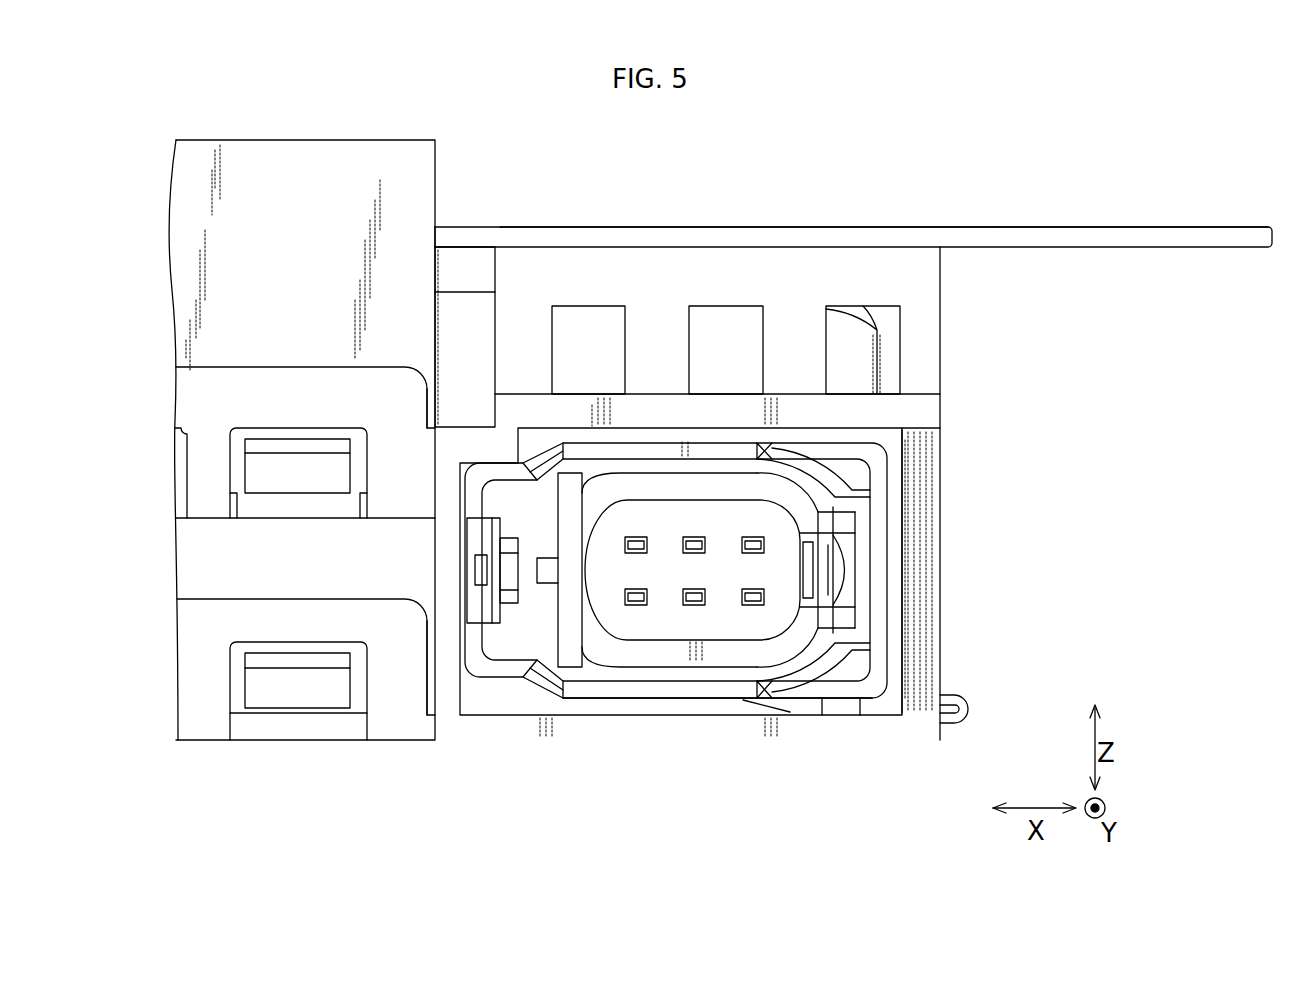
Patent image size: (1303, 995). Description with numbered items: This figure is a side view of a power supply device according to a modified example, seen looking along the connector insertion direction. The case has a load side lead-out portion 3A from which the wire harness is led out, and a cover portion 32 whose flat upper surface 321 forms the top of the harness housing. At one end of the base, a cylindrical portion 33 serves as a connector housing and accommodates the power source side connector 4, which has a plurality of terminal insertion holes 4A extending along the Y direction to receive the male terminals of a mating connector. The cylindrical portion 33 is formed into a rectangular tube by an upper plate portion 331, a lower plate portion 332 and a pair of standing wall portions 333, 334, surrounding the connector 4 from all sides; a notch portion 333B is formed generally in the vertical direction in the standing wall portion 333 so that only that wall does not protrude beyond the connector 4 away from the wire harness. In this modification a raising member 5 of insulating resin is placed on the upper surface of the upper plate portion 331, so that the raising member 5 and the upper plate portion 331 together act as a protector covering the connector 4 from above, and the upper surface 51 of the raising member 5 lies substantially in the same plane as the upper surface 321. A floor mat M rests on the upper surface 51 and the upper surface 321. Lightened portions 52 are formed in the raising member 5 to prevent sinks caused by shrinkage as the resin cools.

The load side lead-out portion 3A is at (158, 257).
The cover portion 32 is at (447, 312).
The upper surface 321 is at (476, 250).
The raising member 5 is at (910, 278).
The upper surface 51 is at (652, 226).
The floor mat M is at (1128, 235).
The lightened portion 52 is at (703, 323).
The upper plate portion 331 is at (732, 412).
The cylindrical portion 33 is at (963, 625).
The standing wall portion 333 is at (920, 473).
The notch portion 333B is at (923, 572).
The standing wall portion 334 is at (448, 637).
The lower plate portion 332 is at (773, 722).
The power source side connector 4 is at (858, 467).
The terminal insertion holes 4A is at (753, 537).